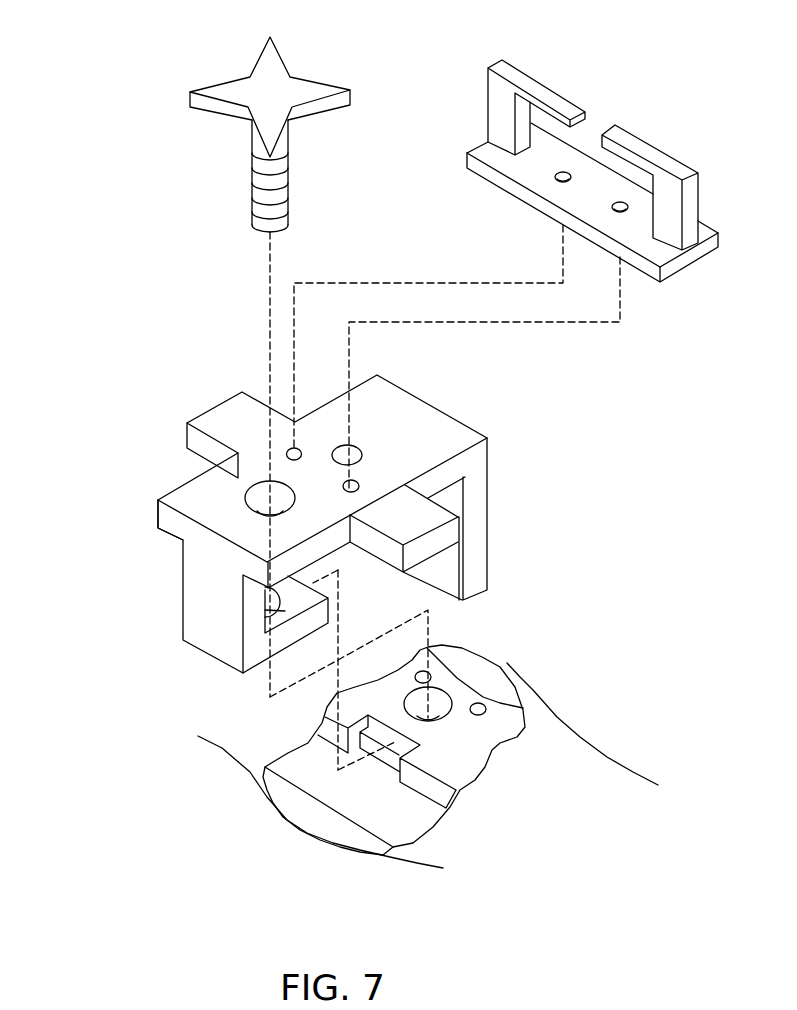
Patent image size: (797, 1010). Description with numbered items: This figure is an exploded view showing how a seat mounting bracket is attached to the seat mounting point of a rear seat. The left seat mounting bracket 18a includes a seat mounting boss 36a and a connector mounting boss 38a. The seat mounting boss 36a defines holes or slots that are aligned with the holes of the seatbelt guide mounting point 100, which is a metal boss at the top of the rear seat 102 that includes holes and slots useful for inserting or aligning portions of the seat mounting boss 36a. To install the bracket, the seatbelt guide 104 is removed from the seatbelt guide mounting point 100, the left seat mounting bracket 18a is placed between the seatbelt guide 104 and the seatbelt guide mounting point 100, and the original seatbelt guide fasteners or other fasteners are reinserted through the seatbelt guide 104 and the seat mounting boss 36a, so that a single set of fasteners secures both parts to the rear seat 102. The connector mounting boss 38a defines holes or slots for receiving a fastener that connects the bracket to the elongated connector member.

The seatbelt guide 104 is at (462, 74).
The left seat mounting bracket 18a is at (184, 389).
The seat mounting boss 36a is at (151, 499).
The connector mounting boss 38a is at (494, 565).
The seatbelt guide mounting point 100 is at (471, 683).
The rear seat 102 is at (222, 798).